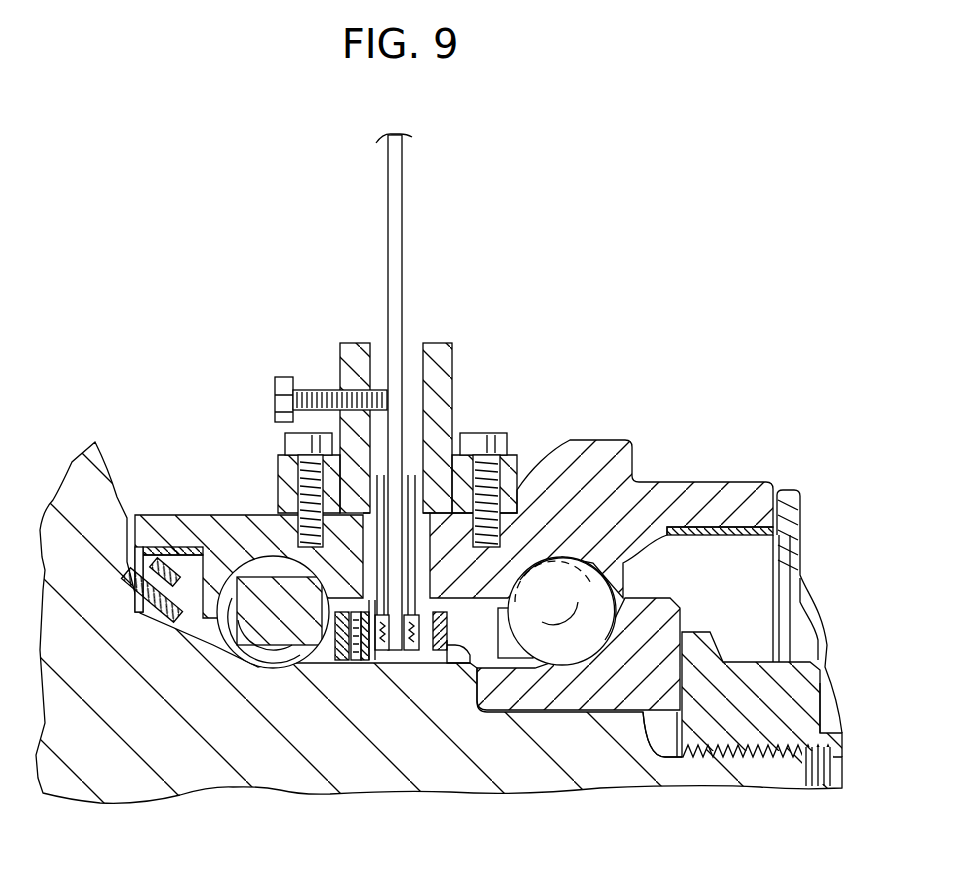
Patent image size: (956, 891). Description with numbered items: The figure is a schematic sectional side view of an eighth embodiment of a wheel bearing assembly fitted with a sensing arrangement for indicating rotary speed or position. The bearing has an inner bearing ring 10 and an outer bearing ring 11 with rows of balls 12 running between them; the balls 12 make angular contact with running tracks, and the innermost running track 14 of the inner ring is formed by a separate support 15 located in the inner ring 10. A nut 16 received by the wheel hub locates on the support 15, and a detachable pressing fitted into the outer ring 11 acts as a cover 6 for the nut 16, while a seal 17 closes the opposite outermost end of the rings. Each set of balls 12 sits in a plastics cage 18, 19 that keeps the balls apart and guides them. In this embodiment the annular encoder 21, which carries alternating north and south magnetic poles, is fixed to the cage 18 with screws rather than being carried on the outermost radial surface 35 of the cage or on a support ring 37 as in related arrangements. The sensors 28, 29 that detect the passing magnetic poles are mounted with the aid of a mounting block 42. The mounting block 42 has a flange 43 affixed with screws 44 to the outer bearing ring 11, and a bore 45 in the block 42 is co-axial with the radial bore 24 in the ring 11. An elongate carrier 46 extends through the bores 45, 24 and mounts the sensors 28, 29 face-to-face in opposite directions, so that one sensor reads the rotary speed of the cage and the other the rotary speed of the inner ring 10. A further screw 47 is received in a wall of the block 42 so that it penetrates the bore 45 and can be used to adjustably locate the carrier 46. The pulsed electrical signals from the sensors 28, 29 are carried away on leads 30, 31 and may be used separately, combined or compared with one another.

The cover 6 is at (800, 530).
The inner bearing ring 10 is at (110, 710).
The outer bearing ring 11 is at (597, 455).
The balls 12 is at (263, 565).
The running track 14 is at (650, 715).
The support 15 is at (668, 605).
The nut 16 is at (770, 702).
The seal 17 is at (142, 557).
The cage 18 is at (213, 647).
The cage 19 is at (520, 650).
The first annular encoder 21 is at (372, 655).
The radial bore 24 is at (258, 650).
The sensor 28 is at (382, 660).
The sensor 29 is at (413, 660).
The lead 30 is at (345, 490).
The lead 31 is at (423, 478).
The outermost radial surface 35 is at (340, 650).
The support ring 37 is at (447, 632).
The mounting block 42 is at (440, 352).
The flange 43 is at (290, 458).
The screws 44 is at (490, 438).
The bore 45 is at (368, 348).
The elongate carrier 46 is at (395, 178).
The screw 47 is at (280, 395).